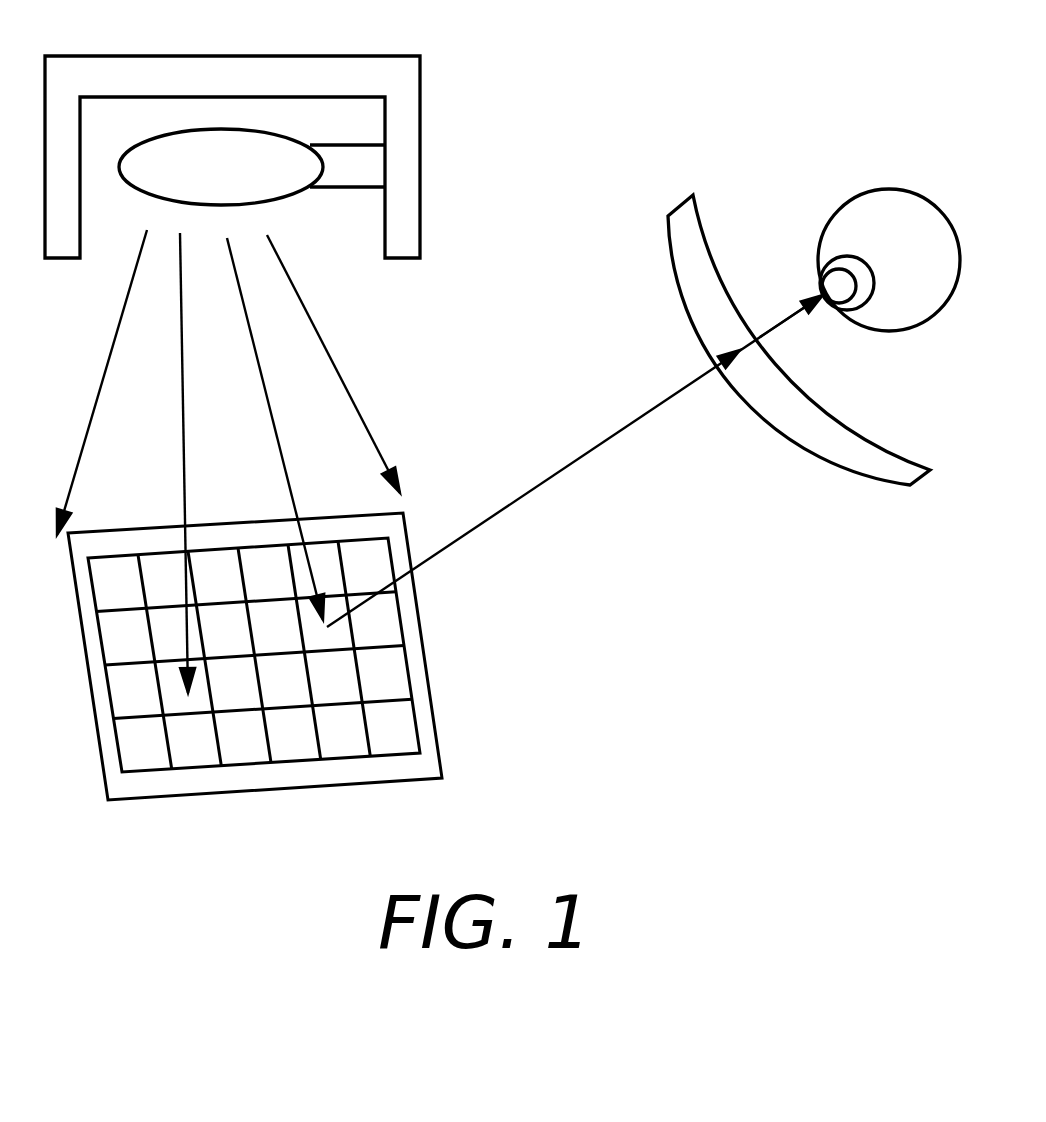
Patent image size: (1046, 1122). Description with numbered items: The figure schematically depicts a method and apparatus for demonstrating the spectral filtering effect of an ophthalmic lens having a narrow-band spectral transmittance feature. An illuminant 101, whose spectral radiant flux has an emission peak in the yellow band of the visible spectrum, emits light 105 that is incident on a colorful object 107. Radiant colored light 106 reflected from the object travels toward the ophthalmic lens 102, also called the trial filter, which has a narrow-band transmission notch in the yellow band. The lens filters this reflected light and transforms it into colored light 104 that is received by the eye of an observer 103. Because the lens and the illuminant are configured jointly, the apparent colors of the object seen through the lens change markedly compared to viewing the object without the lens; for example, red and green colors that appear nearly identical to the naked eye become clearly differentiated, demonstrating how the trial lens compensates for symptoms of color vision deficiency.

The illuminant 101 is at (232, 157).
The ophthalmic lens 102 is at (779, 316).
The eye of an observer 103 is at (889, 239).
The colored light received by the eye 104 is at (790, 308).
The light emitted by the illuminant 105 is at (228, 461).
The radiant colored light reflected from the object 106 is at (575, 461).
The colorful object 107 is at (287, 656).